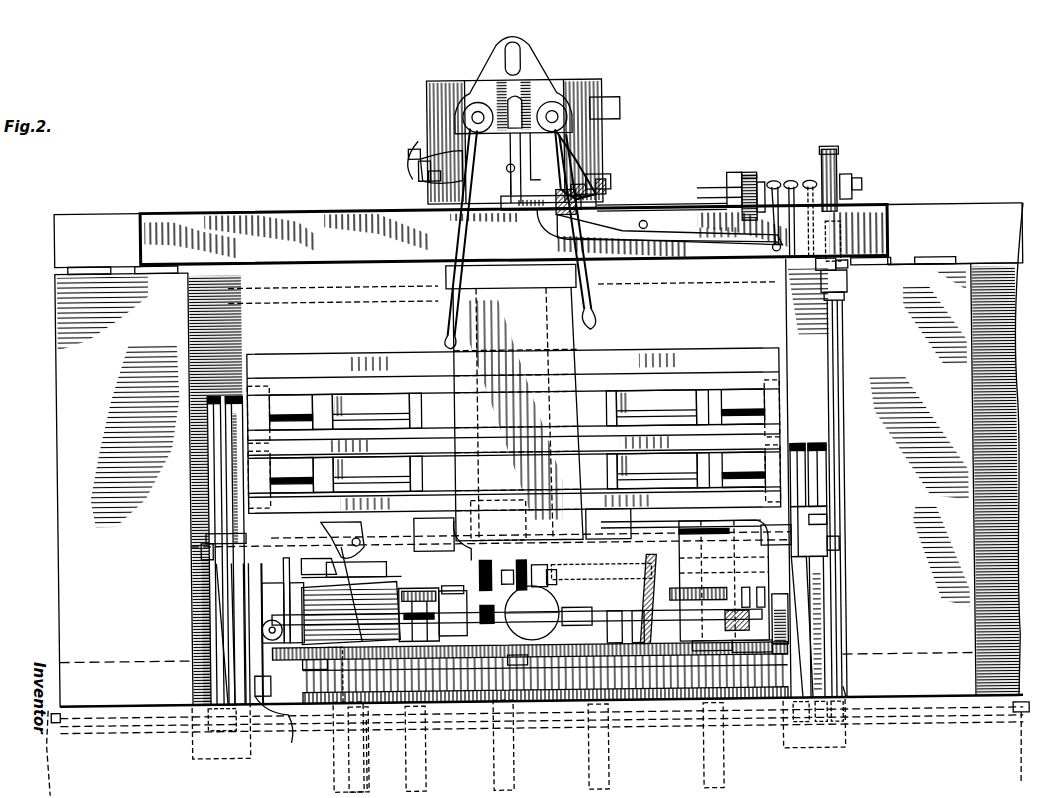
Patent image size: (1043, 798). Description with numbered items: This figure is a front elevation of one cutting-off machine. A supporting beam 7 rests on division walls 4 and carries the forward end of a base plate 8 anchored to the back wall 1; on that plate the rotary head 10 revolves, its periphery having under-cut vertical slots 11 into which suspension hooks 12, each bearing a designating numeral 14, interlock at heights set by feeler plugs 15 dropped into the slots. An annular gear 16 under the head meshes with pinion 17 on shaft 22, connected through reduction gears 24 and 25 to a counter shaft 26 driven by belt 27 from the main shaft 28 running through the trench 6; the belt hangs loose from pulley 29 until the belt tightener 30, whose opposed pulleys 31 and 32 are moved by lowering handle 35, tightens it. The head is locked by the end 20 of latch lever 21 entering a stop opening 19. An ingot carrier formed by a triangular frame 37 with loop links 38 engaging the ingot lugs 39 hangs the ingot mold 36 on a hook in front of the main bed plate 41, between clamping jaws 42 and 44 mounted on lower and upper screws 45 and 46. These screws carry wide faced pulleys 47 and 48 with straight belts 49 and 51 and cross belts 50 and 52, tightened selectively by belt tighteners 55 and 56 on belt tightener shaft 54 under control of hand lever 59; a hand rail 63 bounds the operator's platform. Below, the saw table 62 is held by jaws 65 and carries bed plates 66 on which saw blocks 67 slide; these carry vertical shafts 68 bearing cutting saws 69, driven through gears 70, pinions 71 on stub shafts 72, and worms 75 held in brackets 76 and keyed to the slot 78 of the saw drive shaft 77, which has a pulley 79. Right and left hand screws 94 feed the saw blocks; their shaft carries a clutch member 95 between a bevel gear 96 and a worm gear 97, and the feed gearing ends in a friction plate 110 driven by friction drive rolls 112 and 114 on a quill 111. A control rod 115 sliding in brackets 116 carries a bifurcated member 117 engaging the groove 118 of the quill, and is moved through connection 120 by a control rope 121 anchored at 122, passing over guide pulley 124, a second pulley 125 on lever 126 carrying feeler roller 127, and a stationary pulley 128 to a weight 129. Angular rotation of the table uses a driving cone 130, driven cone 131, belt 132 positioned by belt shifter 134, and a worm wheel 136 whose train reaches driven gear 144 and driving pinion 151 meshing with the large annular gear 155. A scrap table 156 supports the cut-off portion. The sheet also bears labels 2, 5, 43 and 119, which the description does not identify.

The back wall 1 is at (503, 297).
The base 2 is at (538, 747).
The division walls 4 is at (541, 455).
The shelf 5 is at (491, 527).
The trench 6 is at (225, 752).
The supporting beam 7 is at (514, 234).
The base plate 8 is at (500, 212).
The rotary head 10 is at (598, 80).
The under-cut vertical slots 11 is at (463, 110).
The suspension hooks 12 is at (438, 180).
The designating character 14 is at (416, 142).
The feeler plugs 15 is at (510, 170).
The annular gear 16 is at (590, 185).
The pinion 17 is at (598, 210).
The stop openings 19 is at (612, 180).
The end of latch lever 20 is at (508, 210).
The latch lever 21 is at (612, 218).
The shaft 22 is at (648, 206).
The reduction gear 24 is at (745, 225).
The reduction gear 25 is at (752, 178).
The counter shaft 26 is at (794, 184).
The belt 27 is at (846, 328).
The main shaft 28 is at (90, 728).
The pulley 29 is at (845, 690).
The belt tightener 30 is at (850, 270).
The pulley 31 is at (843, 233).
The pulley 32 is at (848, 300).
The handle 35 is at (832, 152).
The ingot mold 36 is at (518, 414).
The triangular frame 37 is at (532, 52).
The loop links 38 is at (545, 276).
The ingot lugs 39 is at (446, 332).
The main bed plate 41 is at (514, 428).
The clamping jaws 42 is at (511, 473).
The clamping jaws 44 is at (510, 410).
The lower pair of screws 45 is at (517, 472).
The upper pair of screws 46 is at (516, 409).
The wide faced pulley 47 is at (816, 447).
The wide faced pulley 48 is at (226, 393).
The belt 49 is at (818, 476).
The cross belt 50 is at (798, 447).
The belt 51 is at (208, 586).
The cross belt 52 is at (240, 600).
The belt tightener shaft 54 is at (200, 548).
The belt tighteners 55 is at (205, 534).
The belt tighteners 56 is at (215, 575).
The hand lever 59 is at (812, 184).
The saw table 62 is at (385, 752).
The hand rail 63 is at (530, 683).
The jaws 65 is at (545, 690).
The bed plates 66 is at (601, 577).
The saw blocks 67 is at (544, 550).
The vertical shafts 68 is at (709, 580).
The cutting saws 69 is at (363, 538).
The gears 70 is at (698, 601).
The pinions 71 is at (755, 596).
The stub shafts 72 is at (822, 603).
The worms 75 is at (778, 657).
The brackets 76 is at (727, 613).
The saw drive shaft 77 is at (735, 656).
The slot 78 is at (712, 659).
The pulley 79 is at (789, 608).
The right and left hand screws 94 is at (653, 598).
The clutch member 95 is at (520, 560).
The bevel gear 96 is at (488, 560).
The worm gear 97 is at (538, 565).
The friction plate 110 is at (532, 613).
The quill 111 is at (591, 606).
The friction drive roll 112 is at (498, 603).
The friction drive roll 114 is at (555, 605).
The control rod 115 is at (354, 747).
The brackets 116 is at (527, 742).
The bifurcated member 117 is at (502, 680).
The groove 118 is at (462, 603).
The bolt 119 is at (370, 690).
The connection 120 is at (338, 674).
The control rope 121 is at (255, 633).
The anchor 122 is at (448, 533).
The guide pulley 124 is at (262, 613).
The second pulley 125 is at (354, 573).
The lever 126 is at (345, 548).
The feeler roller 127 is at (445, 539).
The stationary pulley 128 is at (261, 624).
The weight 129 is at (281, 729).
The driving cone 130 is at (351, 612).
The driven cone 131 is at (307, 612).
The belt 132 is at (283, 689).
The belt shifter 134 is at (282, 572).
The worm wheel 136 is at (429, 604).
The driven gear 144 is at (420, 690).
The driving pinion 151 is at (470, 680).
The large annular gear 155 is at (668, 690).
The scrap table 156 is at (498, 515).
The top block 43 is at (940, 209).